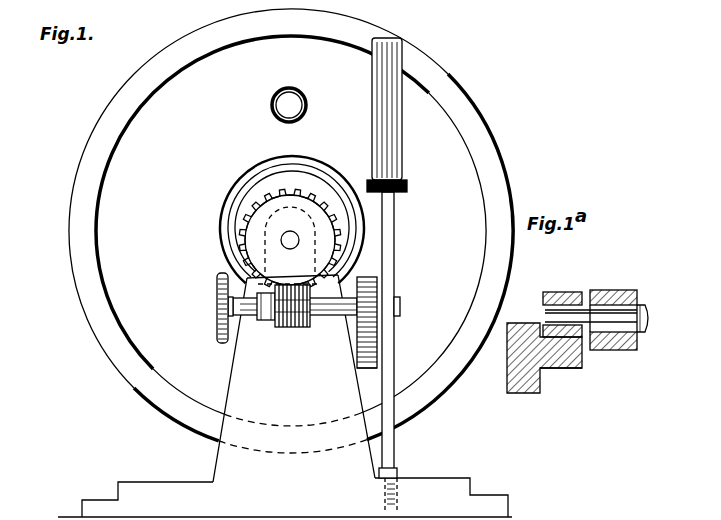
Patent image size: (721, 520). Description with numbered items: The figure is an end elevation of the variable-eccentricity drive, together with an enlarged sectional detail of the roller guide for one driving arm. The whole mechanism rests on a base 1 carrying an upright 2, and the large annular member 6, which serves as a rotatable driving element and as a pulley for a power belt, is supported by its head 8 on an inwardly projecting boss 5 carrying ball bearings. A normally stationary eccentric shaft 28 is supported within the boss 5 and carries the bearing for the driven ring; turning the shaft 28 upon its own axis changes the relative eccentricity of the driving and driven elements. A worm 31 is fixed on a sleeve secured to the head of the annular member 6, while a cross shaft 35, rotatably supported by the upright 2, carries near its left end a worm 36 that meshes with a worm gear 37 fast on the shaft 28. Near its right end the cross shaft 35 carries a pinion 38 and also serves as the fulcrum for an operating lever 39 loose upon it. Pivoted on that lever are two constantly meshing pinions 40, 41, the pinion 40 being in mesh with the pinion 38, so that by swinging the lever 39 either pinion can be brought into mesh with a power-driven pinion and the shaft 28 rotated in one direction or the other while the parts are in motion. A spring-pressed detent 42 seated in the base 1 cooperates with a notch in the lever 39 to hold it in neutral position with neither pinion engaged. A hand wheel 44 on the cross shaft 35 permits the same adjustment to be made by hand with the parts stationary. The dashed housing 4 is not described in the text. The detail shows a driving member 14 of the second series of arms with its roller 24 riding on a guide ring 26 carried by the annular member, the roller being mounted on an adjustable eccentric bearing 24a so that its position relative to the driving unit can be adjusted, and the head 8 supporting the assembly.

In FIG. 1, the base 1 is at (455, 486).
In FIG. 1, the upright 2 is at (218, 462).
In FIG. 1, the housing 4 is at (262, 252).
In FIG. 1, the boss 5 is at (325, 196).
In FIG. 1, the annular member 6 is at (504, 133).
In FIG. 1, the shaft 28 is at (289, 239).
In FIG. 1, the worm 31 is at (306, 180).
In FIG. 1, the worm gear 37 is at (252, 210).
In FIG. 1, the cross shaft 35 is at (248, 320).
In FIG. 1, the worm 36 is at (289, 328).
In FIG. 1, the pinion 38 is at (380, 290).
In FIG. 1, the operating lever 39 is at (396, 210).
In FIG. 1, the pinion 40 is at (363, 371).
In FIG. 1, the pinion 41 is at (376, 271).
In FIG. 1, the spring-pressed detent 42 is at (396, 481).
In FIG. 1, the hand wheel 44 is at (222, 316).
In FIG. 1A, the head 8 is at (507, 382).
In FIG. 1A, the driving member 14 is at (623, 301).
In FIG. 1A, the roller 24 is at (545, 304).
In FIG. 1A, the adjustable eccentric bearing 24a is at (566, 312).
In FIG. 1A, the guide ring 26 is at (562, 362).